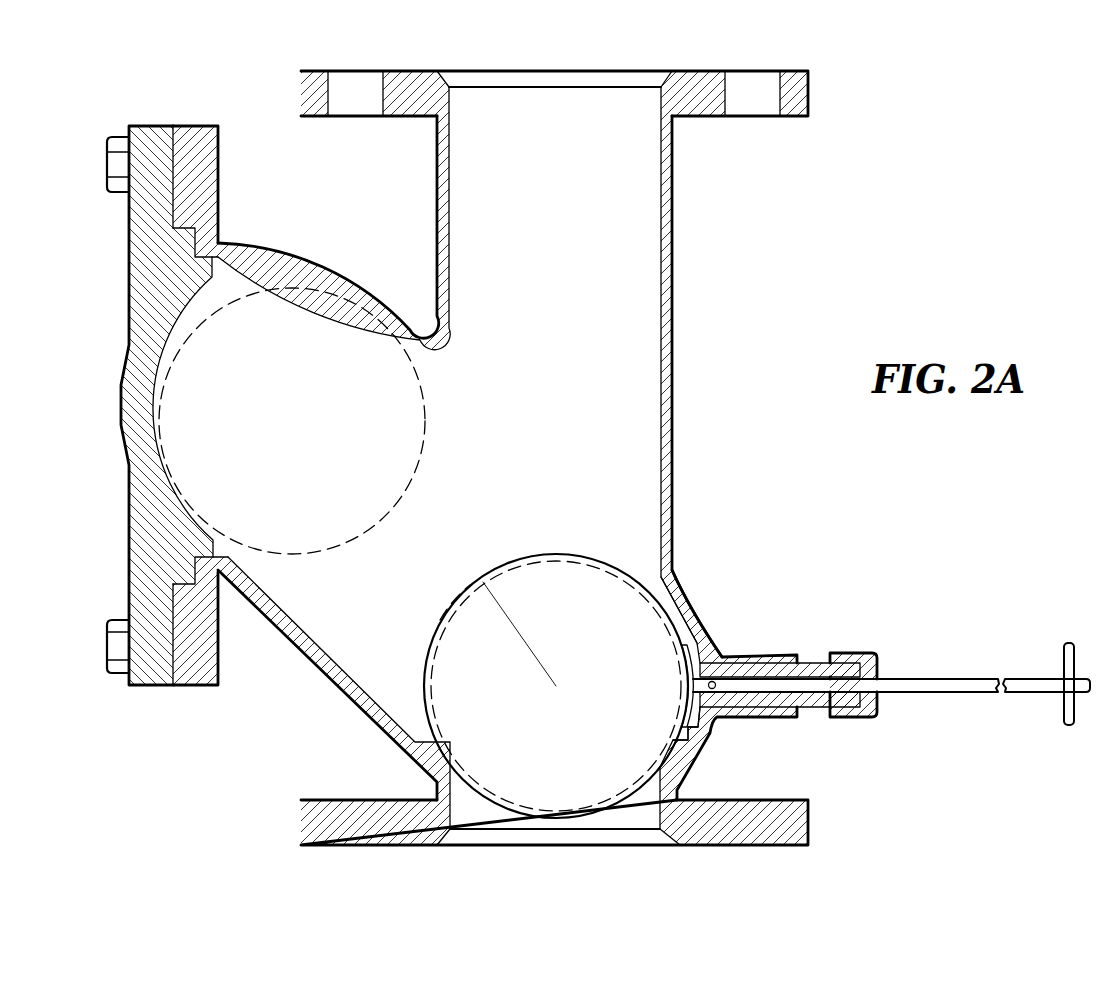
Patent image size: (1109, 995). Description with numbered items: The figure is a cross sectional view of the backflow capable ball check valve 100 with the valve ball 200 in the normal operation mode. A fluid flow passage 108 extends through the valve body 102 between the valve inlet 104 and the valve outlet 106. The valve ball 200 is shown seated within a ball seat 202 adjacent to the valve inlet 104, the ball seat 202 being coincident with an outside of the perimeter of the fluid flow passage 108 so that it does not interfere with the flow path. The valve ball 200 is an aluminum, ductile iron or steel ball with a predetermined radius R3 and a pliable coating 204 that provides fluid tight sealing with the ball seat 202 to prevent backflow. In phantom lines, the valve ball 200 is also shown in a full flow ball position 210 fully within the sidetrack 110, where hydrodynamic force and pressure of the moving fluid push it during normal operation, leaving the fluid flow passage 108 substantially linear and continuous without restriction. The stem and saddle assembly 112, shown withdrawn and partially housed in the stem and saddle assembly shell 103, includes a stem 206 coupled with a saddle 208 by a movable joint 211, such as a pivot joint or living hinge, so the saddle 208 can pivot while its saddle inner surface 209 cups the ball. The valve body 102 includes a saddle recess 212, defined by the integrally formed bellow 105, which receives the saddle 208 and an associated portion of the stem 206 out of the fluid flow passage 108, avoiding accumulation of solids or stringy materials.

The backflow capable ball check valve 100 is at (752, 468).
The valve body 102 is at (490, 458).
The stem and saddle assembly shell 103 is at (793, 655).
The valve inlet 104 is at (630, 838).
The integrally formed bellow 105 is at (710, 617).
The valve outlet 106 is at (600, 80).
The fluid flow passage 108 is at (633, 277).
The sidetrack 110 is at (257, 562).
The stem and saddle assembly 112 is at (957, 688).
The valve ball 200 is at (525, 663).
The ball seat 202 is at (442, 748).
The pliable coating 204 is at (447, 602).
The stem 206 is at (932, 682).
The saddle 208 is at (690, 713).
The saddle inner surface 209 is at (683, 665).
The full flow ball position 210 is at (430, 403).
The movable joint 211 is at (712, 680).
The saddle recess 212 is at (680, 618).
The predetermined radius R3 is at (481, 579).